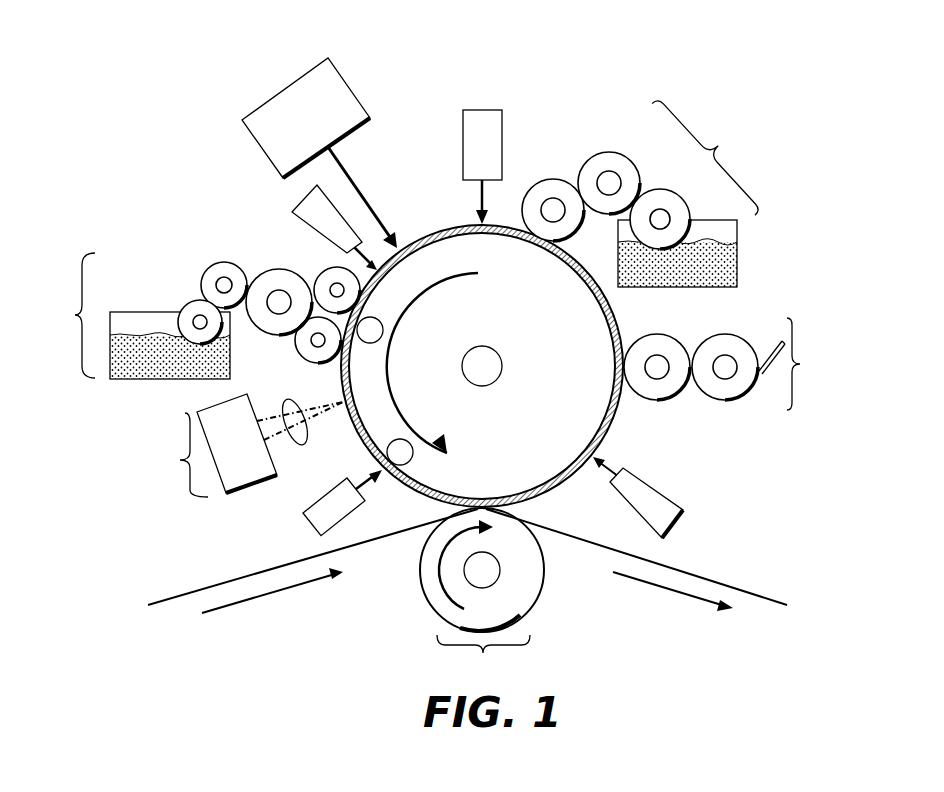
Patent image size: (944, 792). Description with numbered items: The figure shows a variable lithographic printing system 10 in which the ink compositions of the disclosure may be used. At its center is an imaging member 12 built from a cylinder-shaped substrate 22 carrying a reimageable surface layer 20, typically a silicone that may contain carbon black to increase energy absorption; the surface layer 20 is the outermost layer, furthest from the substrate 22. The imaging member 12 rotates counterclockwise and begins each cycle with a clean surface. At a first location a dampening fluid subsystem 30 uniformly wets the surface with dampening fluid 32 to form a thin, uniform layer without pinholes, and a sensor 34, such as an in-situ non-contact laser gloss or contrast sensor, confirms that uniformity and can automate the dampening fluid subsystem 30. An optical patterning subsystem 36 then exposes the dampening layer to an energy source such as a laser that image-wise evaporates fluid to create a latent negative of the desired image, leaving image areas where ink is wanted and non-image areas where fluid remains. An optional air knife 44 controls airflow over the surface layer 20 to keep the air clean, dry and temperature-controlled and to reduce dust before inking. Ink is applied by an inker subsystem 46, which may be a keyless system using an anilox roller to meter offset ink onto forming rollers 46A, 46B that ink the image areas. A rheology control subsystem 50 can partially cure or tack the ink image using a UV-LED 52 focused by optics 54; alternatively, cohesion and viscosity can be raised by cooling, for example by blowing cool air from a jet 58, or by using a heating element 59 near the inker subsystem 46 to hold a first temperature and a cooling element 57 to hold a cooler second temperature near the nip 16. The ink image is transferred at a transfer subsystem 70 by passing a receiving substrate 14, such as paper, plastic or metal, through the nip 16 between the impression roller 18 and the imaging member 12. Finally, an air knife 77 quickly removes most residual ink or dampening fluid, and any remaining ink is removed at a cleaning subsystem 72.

The system 10 is at (168, 146).
The imaging member 12 is at (620, 418).
The receiving substrate 14 is at (243, 573).
The nip 16 is at (482, 503).
The impression roller 18 is at (543, 588).
The reimageable surface layer 20 is at (447, 232).
The substrate 22 is at (432, 257).
The dampening fluid subsystem 30 is at (659, 188).
The dampening fluid 32 is at (737, 266).
The sensor 34 is at (483, 108).
The optical patterning subsystem 36 is at (350, 88).
The air knife 44 is at (298, 203).
The inker subsystem 46 is at (202, 316).
The forming roller 46A is at (365, 308).
The forming roller 46B is at (350, 348).
The rheology control subsystem 50 is at (248, 463).
The UV-LED 52 is at (253, 490).
The optics 54 is at (303, 447).
The cooling element 57 is at (400, 452).
The jet 58 is at (313, 523).
The heating element 59 is at (370, 330).
The transfer subsystem 70 is at (483, 659).
The cleaning subsystem 72 is at (729, 364).
The air knife 77 is at (673, 523).